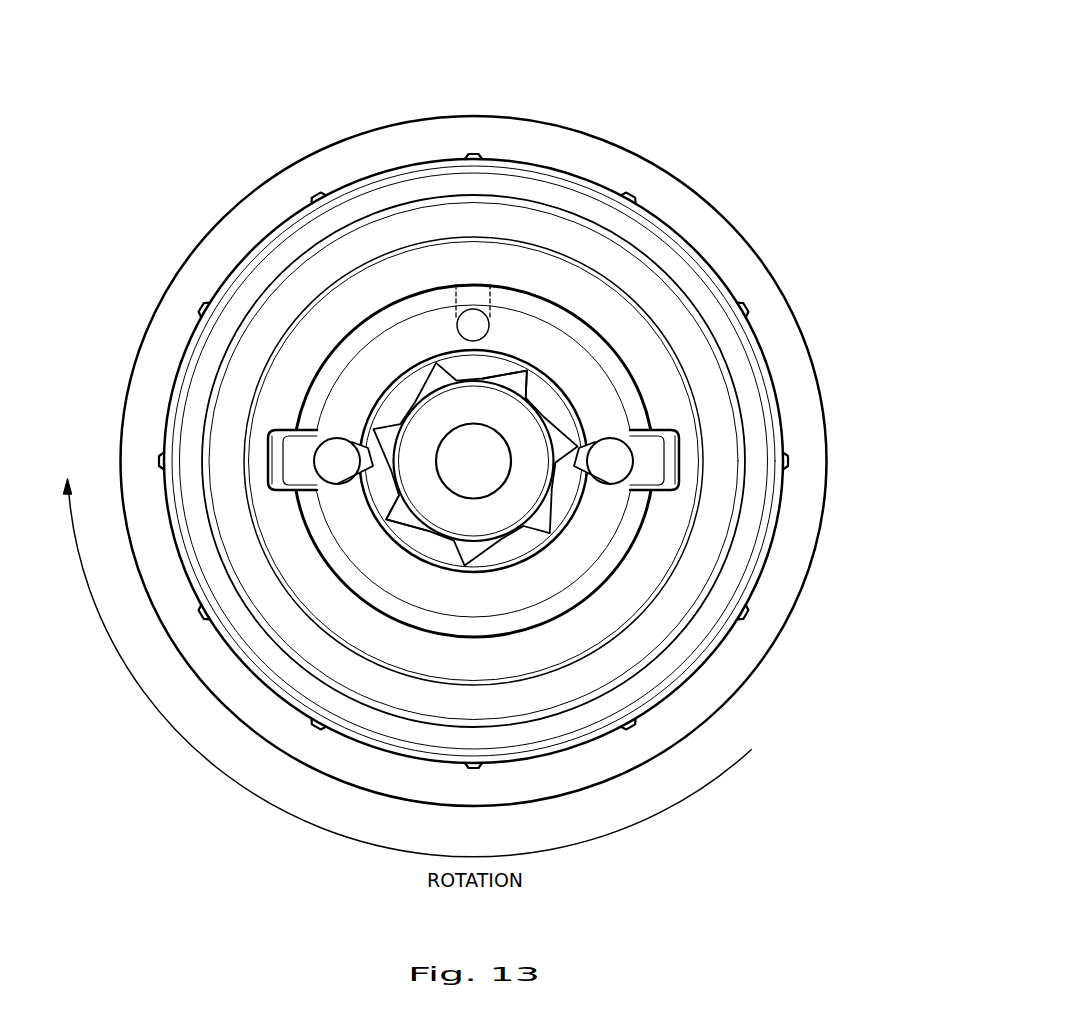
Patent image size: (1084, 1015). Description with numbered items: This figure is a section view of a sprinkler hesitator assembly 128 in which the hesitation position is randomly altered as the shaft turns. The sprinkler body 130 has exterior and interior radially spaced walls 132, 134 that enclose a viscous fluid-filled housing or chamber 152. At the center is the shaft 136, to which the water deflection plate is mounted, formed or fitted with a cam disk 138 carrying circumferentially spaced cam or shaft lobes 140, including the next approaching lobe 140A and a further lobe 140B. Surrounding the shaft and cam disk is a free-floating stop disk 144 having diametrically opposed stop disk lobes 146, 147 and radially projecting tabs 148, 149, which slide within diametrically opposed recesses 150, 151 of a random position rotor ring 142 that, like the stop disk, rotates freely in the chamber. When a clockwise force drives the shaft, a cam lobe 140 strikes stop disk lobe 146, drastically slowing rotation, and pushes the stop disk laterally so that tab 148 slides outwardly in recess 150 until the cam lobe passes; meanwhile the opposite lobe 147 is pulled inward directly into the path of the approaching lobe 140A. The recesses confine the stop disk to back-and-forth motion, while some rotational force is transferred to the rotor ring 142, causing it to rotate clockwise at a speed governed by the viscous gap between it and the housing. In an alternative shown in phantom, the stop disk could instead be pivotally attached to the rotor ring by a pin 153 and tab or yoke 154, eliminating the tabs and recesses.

The sprinkler hesitator assembly 128 is at (692, 80).
The sprinkler body 130 is at (737, 222).
The exterior wall 132 is at (236, 221).
The interior wall 134 is at (263, 338).
The center shaft 136 is at (455, 469).
The cam disk 138 is at (455, 411).
The cam or shaft lobes 140 is at (562, 423).
The next approaching cam lobe 140A is at (396, 518).
The drive lobe 140B is at (522, 380).
The random position rotor ring 142 is at (456, 273).
The free-floating stop disk 144 is at (524, 584).
The stop disk lobe 146 is at (607, 476).
The opposite stop disk lobe 147 is at (361, 478).
The stop disk tab 148 is at (657, 465).
The stop disk tab 149 is at (297, 459).
The recess 150 is at (675, 432).
The recess 151 is at (290, 428).
The viscous chamber 152 is at (513, 622).
The pin 153 is at (455, 330).
The tab or yoke 154 is at (498, 294).